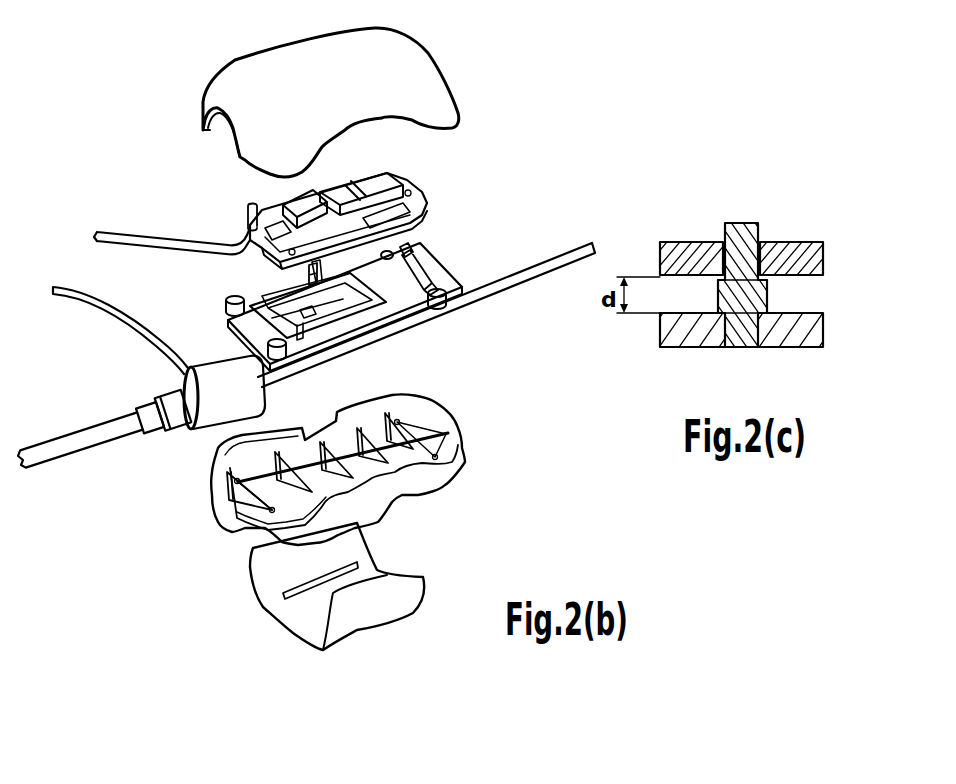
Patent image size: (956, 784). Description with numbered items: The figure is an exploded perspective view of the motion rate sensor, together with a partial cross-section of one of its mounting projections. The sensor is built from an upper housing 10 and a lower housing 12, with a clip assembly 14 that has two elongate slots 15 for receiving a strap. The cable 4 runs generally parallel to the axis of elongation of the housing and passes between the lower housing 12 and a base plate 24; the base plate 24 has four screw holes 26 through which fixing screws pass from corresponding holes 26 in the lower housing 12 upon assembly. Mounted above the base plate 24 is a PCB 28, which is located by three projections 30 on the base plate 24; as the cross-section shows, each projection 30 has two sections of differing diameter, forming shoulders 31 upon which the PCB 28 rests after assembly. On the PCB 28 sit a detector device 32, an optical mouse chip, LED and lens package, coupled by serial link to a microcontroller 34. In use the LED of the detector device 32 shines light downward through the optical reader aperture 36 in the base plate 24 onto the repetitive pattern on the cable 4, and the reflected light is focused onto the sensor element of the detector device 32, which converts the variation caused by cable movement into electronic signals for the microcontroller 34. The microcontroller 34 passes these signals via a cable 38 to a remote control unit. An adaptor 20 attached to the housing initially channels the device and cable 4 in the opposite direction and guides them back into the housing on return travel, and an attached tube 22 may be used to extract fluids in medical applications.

In FIG. 2B, the cable 4 is at (503, 297).
In FIG. 2B, the upper housing 10 is at (458, 77).
In FIG. 2B, the lower housing 12 is at (467, 487).
In FIG. 2B, the clip assembly 14 is at (345, 581).
In FIG. 2B, the elongate slots 15 is at (273, 613).
In FIG. 2B, the adaptor 20 is at (120, 440).
In FIG. 2B, the tube 22 is at (157, 355).
In FIG. 2B, the base plate 24 is at (377, 318).
In FIG. 2C, the base plate 24 is at (682, 348).
In FIG. 2B, the screw holes 26 is at (225, 307).
In FIG. 2B, the PCB 28 is at (332, 220).
In FIG. 2C, the PCB 28 is at (686, 242).
In FIG. 2B, the projections 30 is at (418, 260).
In FIG. 2C, the projections 30 is at (750, 222).
In FIG. 2C, the shoulders 31 is at (757, 300).
In FIG. 2B, the detector device 32 is at (290, 205).
In FIG. 2B, the microcontroller 34 is at (392, 174).
In FIG. 2B, the optical reader aperture 36 is at (280, 287).
In FIG. 2B, the cable 38 is at (122, 232).